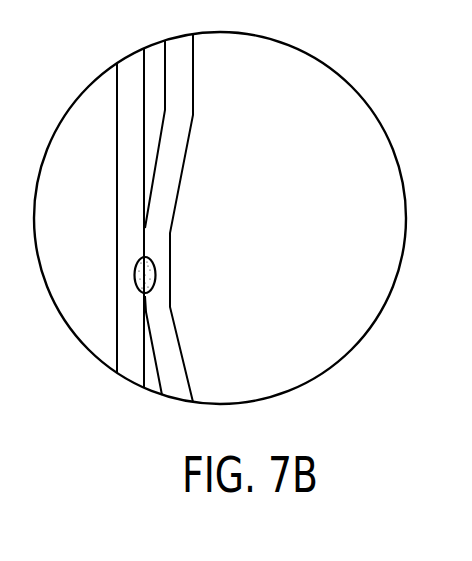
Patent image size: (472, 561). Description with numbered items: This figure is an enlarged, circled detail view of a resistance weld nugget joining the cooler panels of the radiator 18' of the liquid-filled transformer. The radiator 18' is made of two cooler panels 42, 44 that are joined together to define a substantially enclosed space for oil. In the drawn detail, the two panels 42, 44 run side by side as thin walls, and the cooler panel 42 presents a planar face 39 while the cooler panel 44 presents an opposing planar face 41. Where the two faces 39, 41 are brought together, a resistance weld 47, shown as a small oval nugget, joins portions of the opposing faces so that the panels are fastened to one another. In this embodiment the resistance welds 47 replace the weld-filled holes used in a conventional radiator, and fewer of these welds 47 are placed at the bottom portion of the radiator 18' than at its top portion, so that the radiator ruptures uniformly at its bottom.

The radiator 18' is at (77, 218).
The planar face 39 is at (166, 80).
The planar face 41 is at (143, 137).
The cooler panel 42 is at (177, 93).
The cooler panel 44 is at (116, 158).
The resistance weld 47 is at (170, 276).